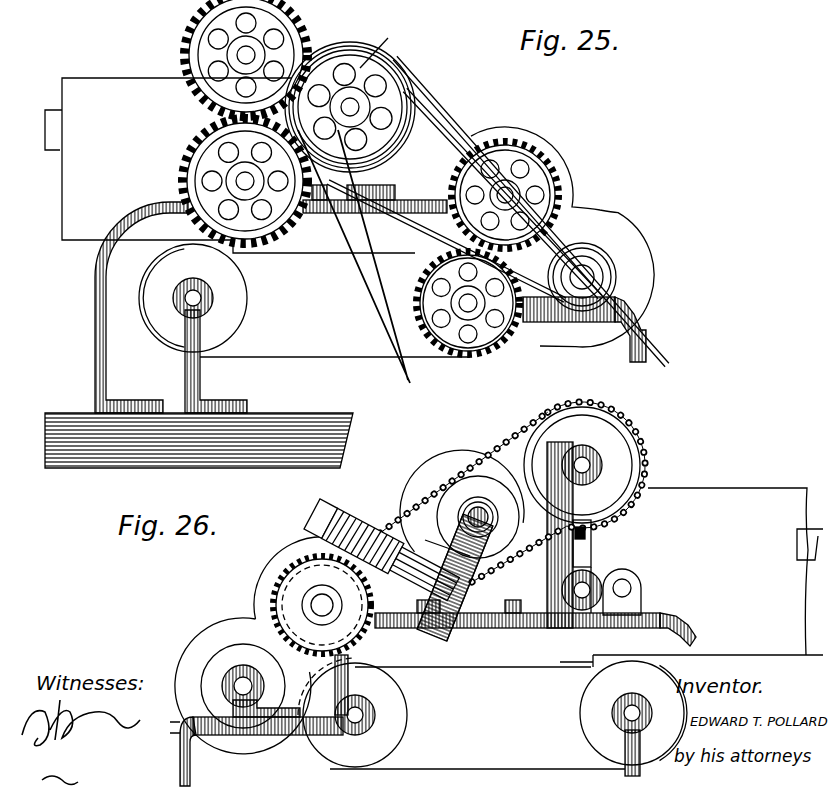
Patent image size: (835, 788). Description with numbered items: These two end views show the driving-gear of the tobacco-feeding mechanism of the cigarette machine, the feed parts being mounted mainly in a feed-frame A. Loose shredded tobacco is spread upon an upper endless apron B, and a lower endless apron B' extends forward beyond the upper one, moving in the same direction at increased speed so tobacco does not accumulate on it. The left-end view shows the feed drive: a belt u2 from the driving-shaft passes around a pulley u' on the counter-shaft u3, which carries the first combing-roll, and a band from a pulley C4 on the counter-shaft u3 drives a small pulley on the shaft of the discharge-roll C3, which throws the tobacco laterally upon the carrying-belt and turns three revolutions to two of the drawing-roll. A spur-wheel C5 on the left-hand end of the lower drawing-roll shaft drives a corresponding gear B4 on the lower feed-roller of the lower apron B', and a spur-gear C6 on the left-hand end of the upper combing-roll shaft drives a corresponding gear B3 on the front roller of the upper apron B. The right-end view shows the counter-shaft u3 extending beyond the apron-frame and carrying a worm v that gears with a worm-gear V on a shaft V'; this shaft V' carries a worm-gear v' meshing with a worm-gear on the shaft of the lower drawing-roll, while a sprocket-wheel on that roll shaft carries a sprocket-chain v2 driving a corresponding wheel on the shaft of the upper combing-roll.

In FIG. 25, the feed-frame A is at (90, 295).
In FIG. 26, the feed-frame A is at (652, 618).
In FIG. 25, the upper endless apron B is at (225, 165).
In FIG. 26, the upper endless apron B is at (691, 577).
In FIG. 25, the lower endless apron B' is at (335, 349).
In FIG. 26, the lower endless apron B' is at (477, 718).
In FIG. 25, the gear on front roller of upper apron B3 is at (199, 170).
In FIG. 25, the gear on lower feed-roller B4 is at (428, 293).
In FIG. 25, the discharge-roll C3 is at (453, 114).
In FIG. 25, the pulley on counter-shaft C4 is at (604, 278).
In FIG. 25, the spur-wheel C5 is at (200, 82).
In FIG. 25, the spur-gear C6 is at (462, 190).
In FIG. 25, the pulley on counter-shaft u' is at (380, 43).
In FIG. 25, the belt u2 is at (383, 298).
In FIG. 25, the counter-shaft u3 is at (351, 104).
In FIG. 26, the counter-shaft u3 is at (468, 515).
In FIG. 26, the worm v is at (478, 517).
In FIG. 26, the worm-gear v' is at (382, 551).
In FIG. 26, the sprocket-chain v2 is at (446, 486).
In FIG. 26, the worm-gear V is at (440, 538).
In FIG. 26, the shaft V' is at (439, 577).